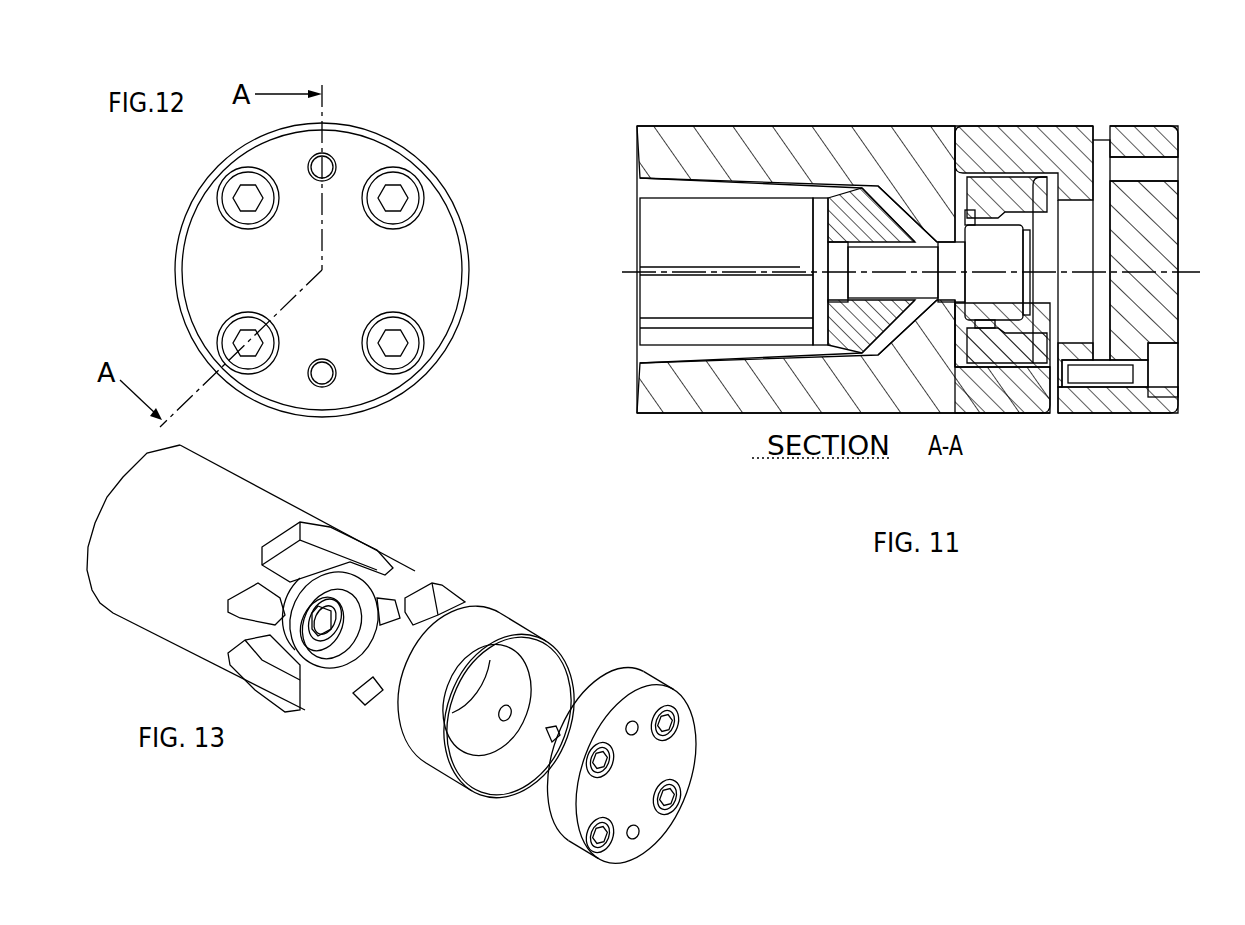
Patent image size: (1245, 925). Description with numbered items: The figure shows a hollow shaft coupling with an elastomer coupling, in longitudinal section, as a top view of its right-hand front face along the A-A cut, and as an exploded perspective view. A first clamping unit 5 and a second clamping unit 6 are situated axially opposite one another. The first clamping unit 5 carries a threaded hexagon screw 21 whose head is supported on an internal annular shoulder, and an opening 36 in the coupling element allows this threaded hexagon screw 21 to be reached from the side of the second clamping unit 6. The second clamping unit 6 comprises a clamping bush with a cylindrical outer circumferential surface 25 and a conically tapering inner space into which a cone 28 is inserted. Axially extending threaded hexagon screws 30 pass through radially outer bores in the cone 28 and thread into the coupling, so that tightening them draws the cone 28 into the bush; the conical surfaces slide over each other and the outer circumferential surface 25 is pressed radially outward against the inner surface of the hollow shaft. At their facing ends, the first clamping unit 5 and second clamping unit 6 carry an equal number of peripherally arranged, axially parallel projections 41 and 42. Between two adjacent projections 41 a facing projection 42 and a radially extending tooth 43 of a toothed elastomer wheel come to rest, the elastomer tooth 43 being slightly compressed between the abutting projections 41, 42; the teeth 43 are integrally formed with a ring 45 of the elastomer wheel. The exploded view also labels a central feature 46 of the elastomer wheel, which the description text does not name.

In FIG. 11, the first clamping unit 5 is at (865, 379).
In FIG. 13, the first clamping unit 5 is at (248, 510).
In FIG. 11, the second clamping unit 6 is at (1109, 384).
In FIG. 13, the second clamping unit 6 is at (503, 620).
In FIG. 11, the threaded hexagon screw 21 is at (990, 243).
In FIG. 11, the cylindrical outer circumferential surface 25 is at (1135, 415).
In FIG. 11, the cone 28 is at (1153, 315).
In FIG. 11, the threaded hexagon screw 30 is at (1168, 375).
In FIG. 11, the opening 36 is at (1073, 240).
In FIG. 11, the projections 41 is at (1028, 400).
In FIG. 13, the projections 41 is at (277, 595).
In FIG. 11, the projections 42 is at (1032, 150).
In FIG. 13, the projections 42 is at (437, 600).
In FIG. 13, the tooth 43 is at (393, 563).
In FIG. 11, the ring 45 is at (967, 333).
In FIG. 13, the central bore 46 is at (322, 667).